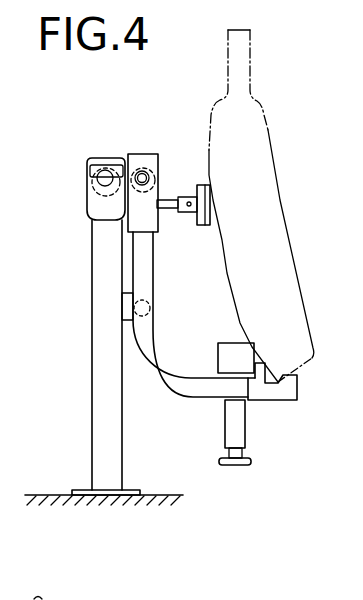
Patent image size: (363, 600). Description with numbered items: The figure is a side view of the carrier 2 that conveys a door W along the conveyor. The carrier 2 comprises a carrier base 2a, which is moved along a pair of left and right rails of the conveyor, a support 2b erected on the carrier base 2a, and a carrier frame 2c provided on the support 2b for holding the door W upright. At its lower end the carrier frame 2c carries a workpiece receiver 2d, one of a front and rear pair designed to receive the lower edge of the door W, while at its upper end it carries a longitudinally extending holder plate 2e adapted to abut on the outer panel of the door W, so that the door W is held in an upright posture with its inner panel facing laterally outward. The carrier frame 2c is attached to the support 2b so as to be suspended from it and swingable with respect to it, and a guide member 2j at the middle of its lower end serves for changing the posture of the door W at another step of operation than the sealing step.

The carrier 2 is at (161, 155).
The carrier base 2a is at (57, 495).
The support 2b is at (102, 330).
The carrier frame 2c is at (162, 374).
The workpiece receiver 2d is at (297, 375).
The holder plate 2e is at (207, 200).
The guide member 2j is at (238, 433).
The door W is at (263, 137).